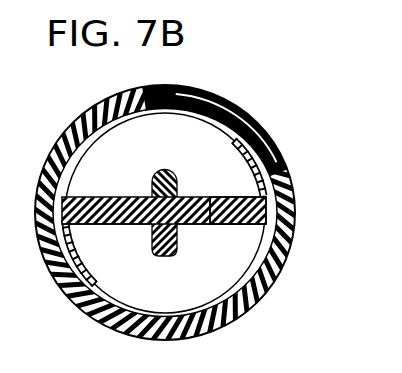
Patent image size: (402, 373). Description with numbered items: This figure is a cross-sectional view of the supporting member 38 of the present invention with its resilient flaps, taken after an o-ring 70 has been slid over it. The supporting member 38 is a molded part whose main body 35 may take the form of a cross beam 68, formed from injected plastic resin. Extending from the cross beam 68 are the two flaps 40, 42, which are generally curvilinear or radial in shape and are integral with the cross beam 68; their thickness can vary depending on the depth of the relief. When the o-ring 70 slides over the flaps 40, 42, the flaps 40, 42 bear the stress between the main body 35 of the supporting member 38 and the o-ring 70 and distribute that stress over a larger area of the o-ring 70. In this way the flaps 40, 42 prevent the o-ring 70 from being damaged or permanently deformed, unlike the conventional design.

The main body 35 is at (107, 251).
The supporting member 38 is at (173, 155).
The flap 40 is at (179, 182).
The flap 42 is at (219, 182).
The cross beam 68 is at (221, 236).
The o-ring 70 is at (196, 212).